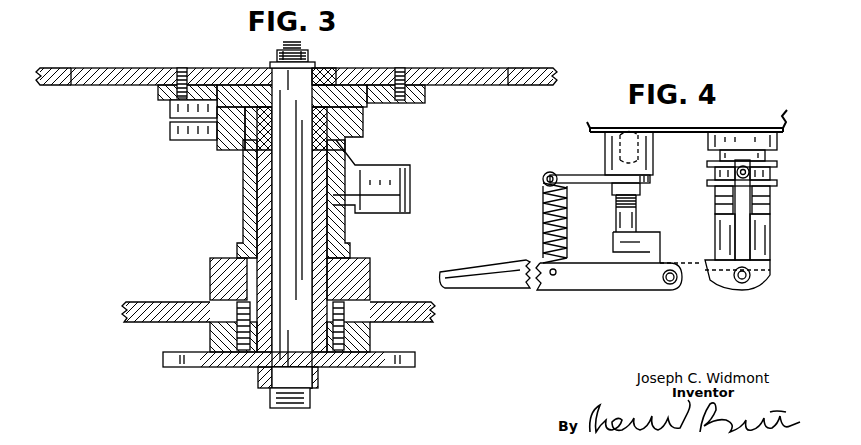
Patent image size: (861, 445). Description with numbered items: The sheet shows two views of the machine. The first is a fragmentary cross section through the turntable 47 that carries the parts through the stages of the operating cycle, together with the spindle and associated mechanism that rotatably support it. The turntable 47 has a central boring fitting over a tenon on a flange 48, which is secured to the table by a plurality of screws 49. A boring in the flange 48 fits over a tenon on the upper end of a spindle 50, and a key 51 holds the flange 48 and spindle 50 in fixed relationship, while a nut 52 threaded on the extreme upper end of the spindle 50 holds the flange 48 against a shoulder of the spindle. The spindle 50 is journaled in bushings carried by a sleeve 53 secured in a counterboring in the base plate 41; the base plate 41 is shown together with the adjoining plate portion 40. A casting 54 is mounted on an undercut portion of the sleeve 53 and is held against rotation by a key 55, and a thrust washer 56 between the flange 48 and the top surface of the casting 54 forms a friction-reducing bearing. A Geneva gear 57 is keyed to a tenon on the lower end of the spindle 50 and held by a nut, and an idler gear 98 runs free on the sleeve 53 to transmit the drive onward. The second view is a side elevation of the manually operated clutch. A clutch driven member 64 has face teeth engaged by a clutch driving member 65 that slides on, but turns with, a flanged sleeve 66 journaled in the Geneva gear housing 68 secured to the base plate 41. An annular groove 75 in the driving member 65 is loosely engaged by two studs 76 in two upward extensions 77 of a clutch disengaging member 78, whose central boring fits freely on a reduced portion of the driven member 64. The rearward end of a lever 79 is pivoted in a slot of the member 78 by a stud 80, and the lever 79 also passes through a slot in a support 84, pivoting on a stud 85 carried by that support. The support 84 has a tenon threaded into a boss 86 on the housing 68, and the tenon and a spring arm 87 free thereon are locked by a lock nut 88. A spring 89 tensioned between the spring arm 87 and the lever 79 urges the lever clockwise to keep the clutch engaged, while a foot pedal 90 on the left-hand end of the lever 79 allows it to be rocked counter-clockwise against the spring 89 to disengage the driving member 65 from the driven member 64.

In FIG. 3, the mounting plate 40 is at (62, 67).
In FIG. 3, the base plate 41 is at (142, 302).
In FIG. 3, the turntable 47 is at (125, 67).
In FIG. 3, the flange 48 is at (412, 104).
In FIG. 3, the screws 49 is at (182, 67).
In FIG. 3, the spindle 50 is at (335, 78).
In FIG. 3, the key 51 is at (275, 78).
In FIG. 3, the nut 52 is at (308, 60).
In FIG. 3, the sleeve 53 is at (265, 182).
In FIG. 3, the casting 54 is at (360, 124).
In FIG. 3, the key 55 is at (245, 142).
In FIG. 3, the thrust washer 56 is at (195, 108).
In FIG. 3, the Geneva gear 57 is at (228, 366).
In FIG. 3, the idler gear 98 is at (212, 264).
In FIG. 4, the clutch driven member 64 is at (715, 200).
In FIG. 4, the clutch driving member 65 is at (715, 186).
In FIG. 4, the flanged sleeve 66 is at (720, 150).
In FIG. 4, the Geneva gear housing 68 is at (588, 120).
In FIG. 4, the annular groove 75 is at (707, 163).
In FIG. 4, the studs 76 is at (752, 162).
In FIG. 4, the upward extensions 77 is at (740, 228).
In FIG. 4, the clutch disengaging member 78 is at (766, 232).
In FIG. 4, the lever 79 is at (715, 286).
In FIG. 4, the stud 80 is at (752, 272).
In FIG. 4, the support 84 is at (613, 240).
In FIG. 4, the stud 85 is at (662, 291).
In FIG. 4, the boss 86 is at (605, 140).
In FIG. 4, the spring arm 87 is at (590, 176).
In FIG. 4, the lock nut 88 is at (612, 190).
In FIG. 4, the spring 89 is at (543, 190).
In FIG. 4, the foot pedal 90 is at (515, 260).